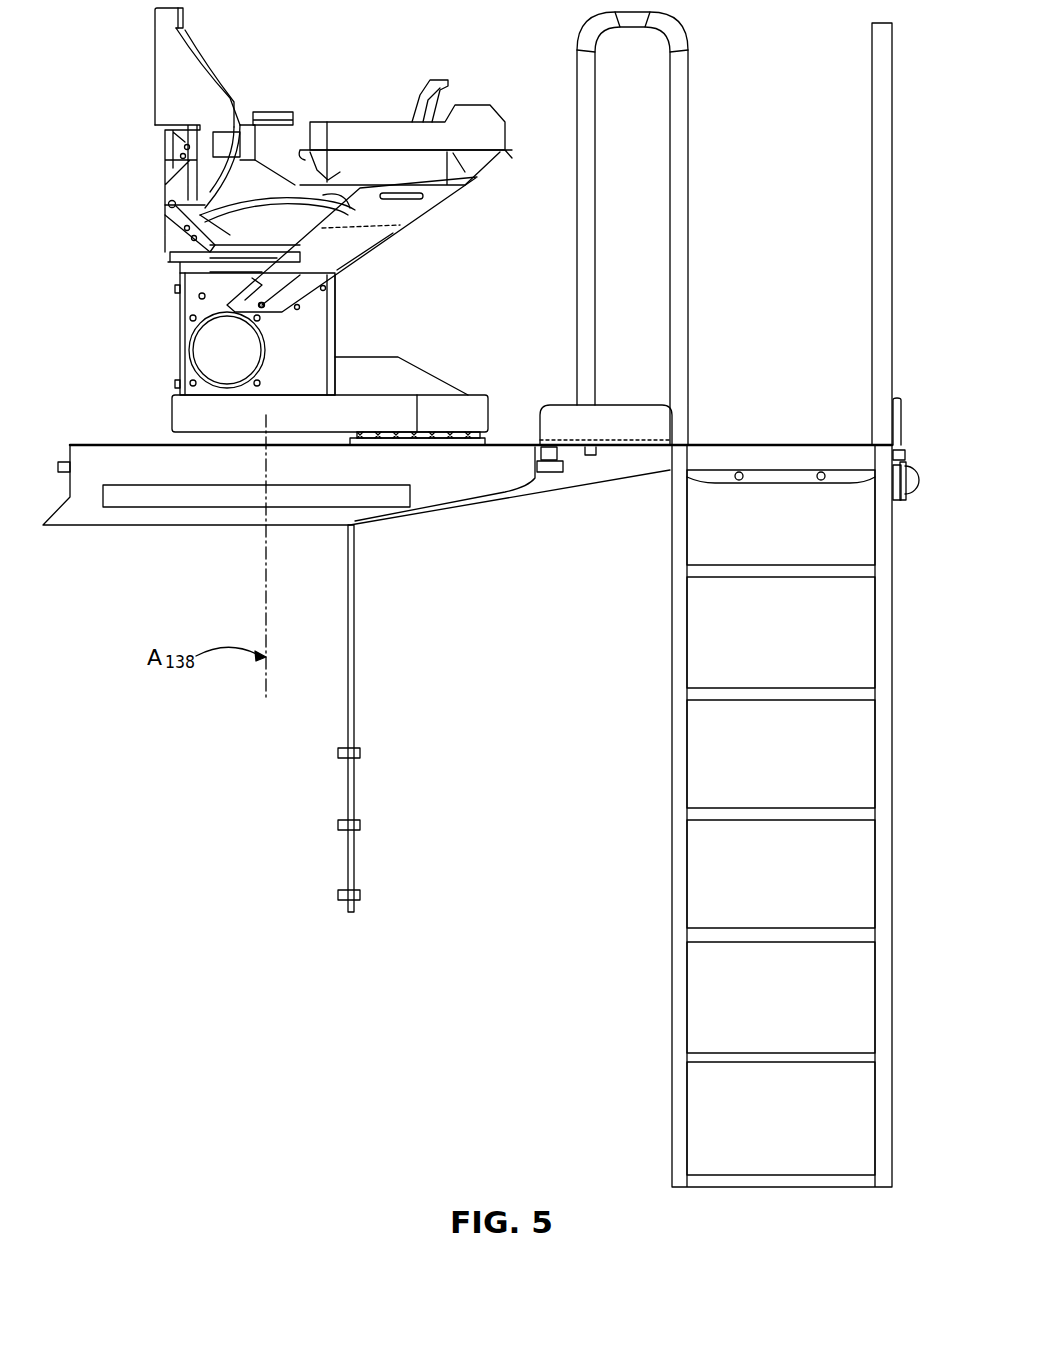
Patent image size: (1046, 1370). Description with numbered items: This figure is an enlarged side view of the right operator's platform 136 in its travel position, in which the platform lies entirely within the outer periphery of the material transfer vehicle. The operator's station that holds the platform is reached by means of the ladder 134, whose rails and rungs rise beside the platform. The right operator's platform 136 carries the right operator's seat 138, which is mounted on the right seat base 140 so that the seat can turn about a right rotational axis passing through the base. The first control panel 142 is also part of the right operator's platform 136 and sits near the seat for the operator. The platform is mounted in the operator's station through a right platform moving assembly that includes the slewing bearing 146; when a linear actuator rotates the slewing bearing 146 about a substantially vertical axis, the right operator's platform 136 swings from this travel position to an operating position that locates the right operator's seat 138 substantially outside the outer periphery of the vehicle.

The ladder 134 is at (893, 210).
The right operator's platform 136 is at (185, 420).
The right operator's seat 138 is at (235, 85).
The right seat base 140 is at (318, 342).
The first control panel 142 is at (485, 115).
The slewing bearing 146 is at (493, 435).